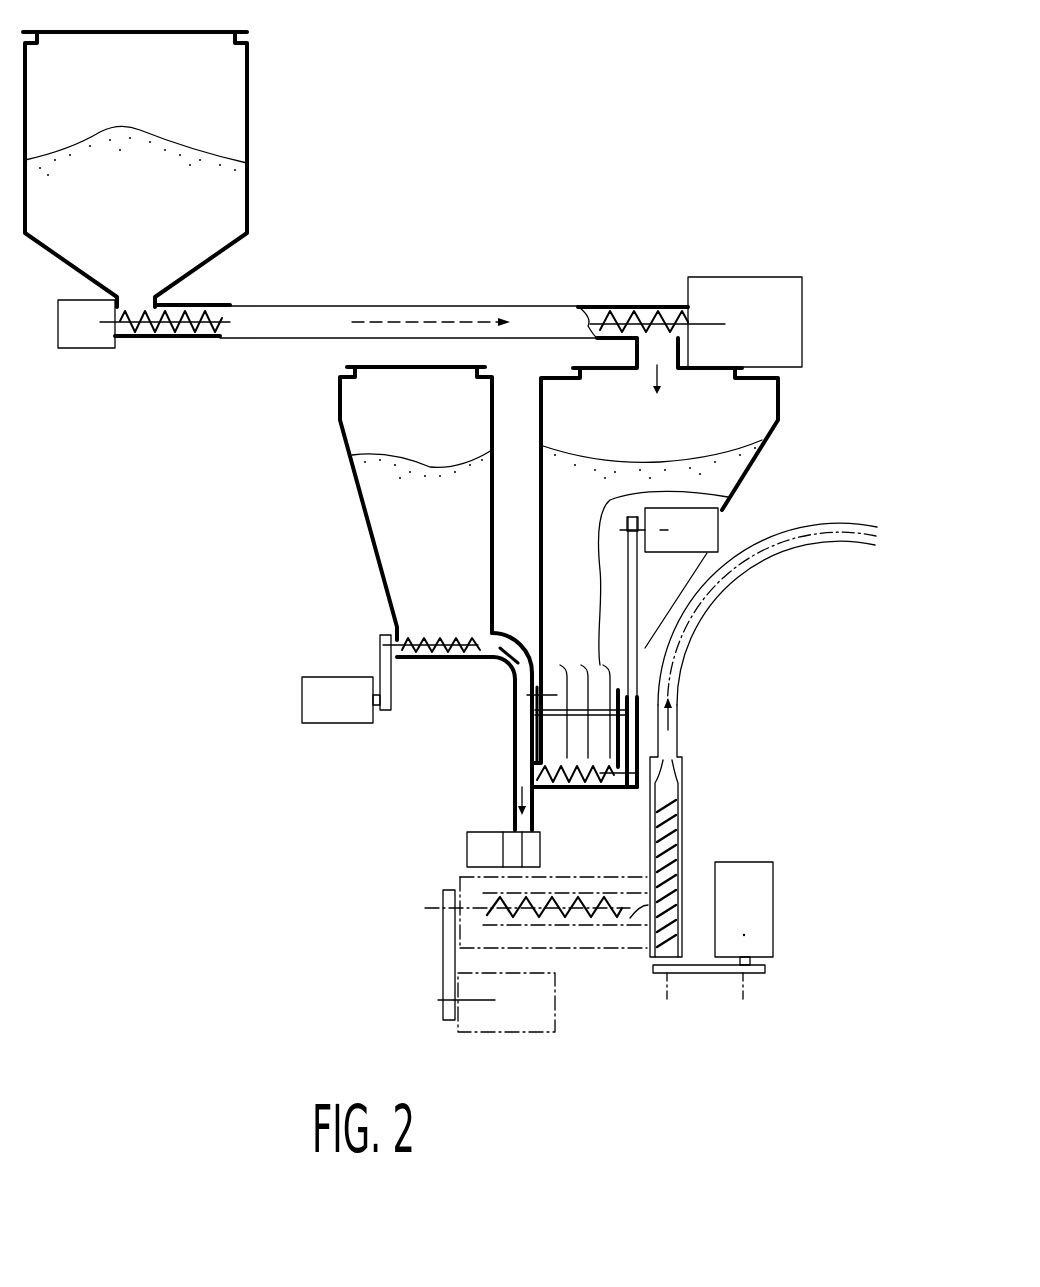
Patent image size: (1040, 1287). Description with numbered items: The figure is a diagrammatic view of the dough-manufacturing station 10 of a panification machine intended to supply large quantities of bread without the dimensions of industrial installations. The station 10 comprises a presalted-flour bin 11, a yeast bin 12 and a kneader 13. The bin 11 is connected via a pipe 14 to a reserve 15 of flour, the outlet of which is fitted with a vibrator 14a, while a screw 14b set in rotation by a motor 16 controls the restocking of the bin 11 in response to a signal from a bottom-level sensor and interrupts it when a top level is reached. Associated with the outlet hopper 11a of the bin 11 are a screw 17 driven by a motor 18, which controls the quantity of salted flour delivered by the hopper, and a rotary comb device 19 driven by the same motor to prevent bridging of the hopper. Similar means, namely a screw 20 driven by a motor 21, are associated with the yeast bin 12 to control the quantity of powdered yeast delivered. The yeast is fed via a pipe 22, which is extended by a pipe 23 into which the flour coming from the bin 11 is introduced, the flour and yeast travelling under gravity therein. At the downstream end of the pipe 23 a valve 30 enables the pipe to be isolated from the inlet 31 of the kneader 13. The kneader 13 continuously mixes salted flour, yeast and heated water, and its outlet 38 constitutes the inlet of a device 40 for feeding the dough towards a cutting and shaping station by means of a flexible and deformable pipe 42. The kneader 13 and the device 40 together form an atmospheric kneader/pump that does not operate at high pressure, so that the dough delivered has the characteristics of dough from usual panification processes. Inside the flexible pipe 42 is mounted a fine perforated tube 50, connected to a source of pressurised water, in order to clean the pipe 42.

The dough-manufacturing station 10 is at (326, 566).
The presalted-flour bin 11 is at (740, 466).
The outlet hopper 11a is at (558, 700).
The yeast bin 12 is at (368, 497).
The kneader 13 is at (582, 960).
The pipe 14 is at (528, 307).
The vibrator 14a is at (147, 328).
The screw 14b is at (597, 340).
The reserve 15 is at (240, 142).
The motor 16 is at (775, 277).
The screw 17 is at (575, 788).
The motor 18 is at (715, 536).
The rotary comb device 19 is at (597, 683).
The screw 20 is at (448, 657).
The motor 21 is at (343, 723).
The pipe 22 is at (512, 677).
The pipe 23 is at (513, 808).
The valve 30 is at (465, 848).
The inlet 31 is at (508, 875).
The outlet 38 is at (648, 908).
The device 40 is at (700, 796).
The flexible and deformable pipe 42 is at (793, 545).
The fine perforated tube 50 is at (725, 596).